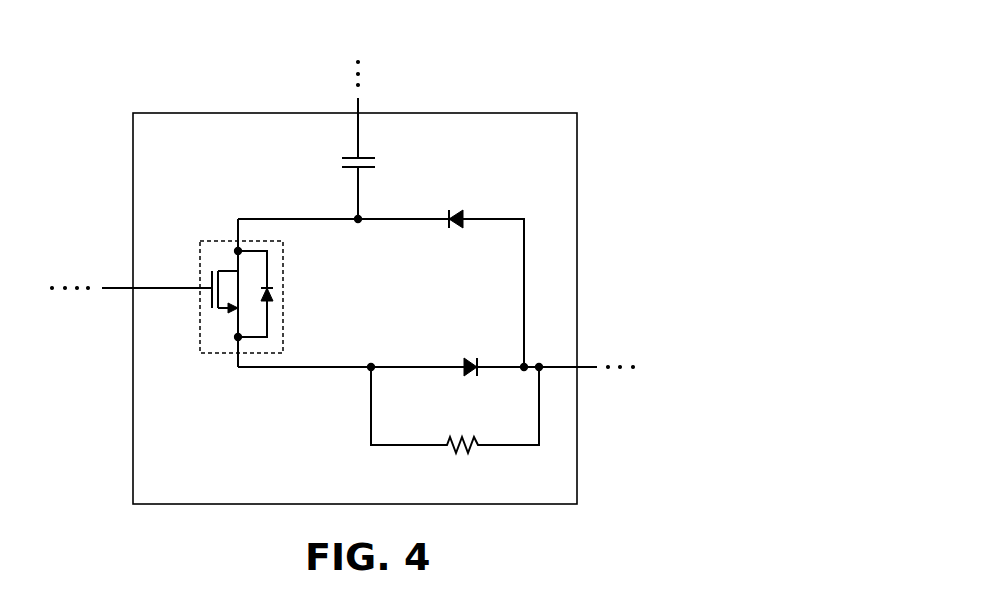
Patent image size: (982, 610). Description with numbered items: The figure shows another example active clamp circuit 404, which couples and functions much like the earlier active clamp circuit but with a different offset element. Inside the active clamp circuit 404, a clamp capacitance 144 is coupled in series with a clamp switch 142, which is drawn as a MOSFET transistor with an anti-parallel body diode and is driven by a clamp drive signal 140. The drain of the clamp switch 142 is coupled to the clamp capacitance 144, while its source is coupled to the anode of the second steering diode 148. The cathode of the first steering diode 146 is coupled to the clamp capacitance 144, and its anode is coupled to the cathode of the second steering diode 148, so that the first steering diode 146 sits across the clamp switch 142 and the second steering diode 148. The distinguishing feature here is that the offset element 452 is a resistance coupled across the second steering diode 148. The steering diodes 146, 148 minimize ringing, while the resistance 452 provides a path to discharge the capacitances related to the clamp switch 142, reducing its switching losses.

The active clamp circuit 404 is at (641, 74).
The clamp capacitance C1 144 is at (313, 152).
The steering diode D1 146 is at (478, 197).
The steering diode D2 148 is at (470, 336).
The offset element R1 452 is at (440, 472).
The clamp drive signal CD 140 is at (78, 303).
The clamp switch 142 is at (215, 360).